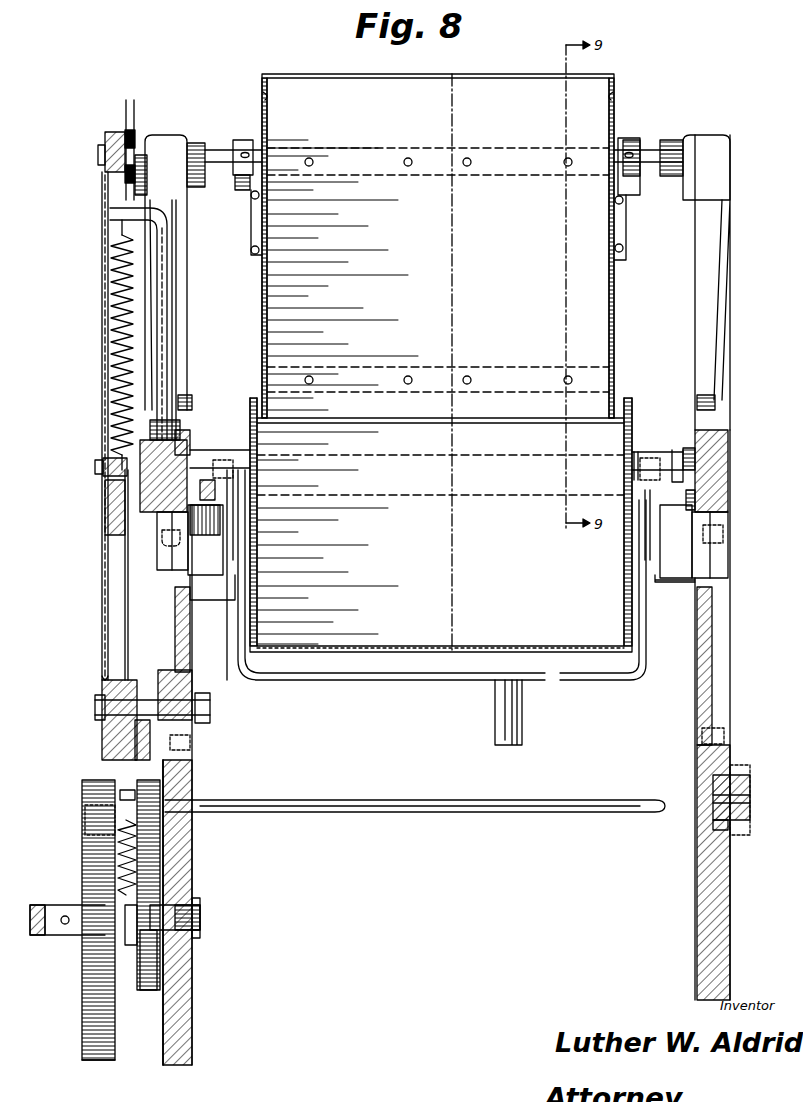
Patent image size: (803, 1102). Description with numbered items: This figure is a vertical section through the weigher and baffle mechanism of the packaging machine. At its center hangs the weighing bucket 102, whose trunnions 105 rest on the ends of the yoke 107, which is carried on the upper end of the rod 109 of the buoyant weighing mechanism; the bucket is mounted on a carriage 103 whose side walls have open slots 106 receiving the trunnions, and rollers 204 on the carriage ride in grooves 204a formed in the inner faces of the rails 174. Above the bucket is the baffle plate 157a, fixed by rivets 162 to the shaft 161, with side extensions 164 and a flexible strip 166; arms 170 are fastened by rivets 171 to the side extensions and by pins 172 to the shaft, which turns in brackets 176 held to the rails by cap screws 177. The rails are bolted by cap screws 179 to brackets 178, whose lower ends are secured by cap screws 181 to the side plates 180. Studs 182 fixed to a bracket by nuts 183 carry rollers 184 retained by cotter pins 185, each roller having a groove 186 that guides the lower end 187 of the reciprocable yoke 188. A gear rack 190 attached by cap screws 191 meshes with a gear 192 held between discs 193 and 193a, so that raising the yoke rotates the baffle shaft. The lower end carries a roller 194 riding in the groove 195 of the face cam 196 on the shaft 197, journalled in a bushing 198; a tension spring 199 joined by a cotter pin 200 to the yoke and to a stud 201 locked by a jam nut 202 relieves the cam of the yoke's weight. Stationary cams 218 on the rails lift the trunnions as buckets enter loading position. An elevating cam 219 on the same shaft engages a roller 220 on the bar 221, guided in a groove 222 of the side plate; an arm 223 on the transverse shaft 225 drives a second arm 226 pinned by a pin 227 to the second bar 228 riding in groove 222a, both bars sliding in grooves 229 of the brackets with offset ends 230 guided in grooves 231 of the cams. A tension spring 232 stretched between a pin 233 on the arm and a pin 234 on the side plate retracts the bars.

The weighing bucket 102 is at (355, 648).
The carriage 103 is at (640, 452).
The trunnions 105 is at (205, 465).
The open slots 106 is at (676, 452).
The yoke 107 is at (305, 684).
The rod 109 is at (495, 712).
The baffle plate 157a is at (303, 80).
The shaft 161 is at (655, 145).
The rivets 162 is at (409, 158).
The side extensions 164 is at (262, 95).
The flexible strip 166 is at (402, 422).
The arms 170 is at (247, 228).
The rivets 171 is at (248, 200).
The pins 172 is at (245, 148).
The rails 174 is at (160, 545).
The brackets 176 is at (187, 362).
The cap screws 177 is at (192, 402).
The brackets 178 is at (195, 678).
The cap screws 179 is at (165, 548).
The side plates 180 is at (195, 1006).
The cap screws 181 is at (195, 745).
The studs 182 is at (210, 712).
The nuts 183 is at (205, 700).
The roller 184 is at (102, 690).
The cotter pin 185 is at (98, 722).
The groove 186 is at (105, 676).
The lower end 187 is at (133, 672).
The yoke 188 is at (102, 324).
The gear rack 190 is at (125, 185).
The cap screws 191 is at (152, 118).
The gears 192 is at (128, 118).
The disc 193 is at (138, 125).
The disc 193a is at (115, 130).
The roller 194 is at (85, 825).
The groove 195 is at (82, 1020).
The baffle-operating face cam 196 is at (98, 1062).
The shaft 197 is at (200, 918).
The bushing 198 is at (200, 940).
The tension spring 199 is at (115, 386).
The cotter pin 200 is at (103, 468).
The stud 201 is at (176, 324).
The jam nut 202 is at (180, 428).
The rollers 204 is at (165, 480).
The grooves 204a is at (700, 490).
The stationary cams 218 is at (245, 528).
The elevating cam 219 is at (148, 990).
The roller 220 is at (150, 850).
The vertically movable bar 221 is at (208, 585).
The groove 222 is at (198, 856).
The groove 222a is at (728, 828).
The arm 223 is at (148, 770).
The shaft 225 is at (363, 795).
The arm 226 is at (745, 765).
The pin 227 is at (750, 797).
The second vertically movable bar 228 is at (677, 585).
The grooves 229 is at (180, 642).
The offset ends 230 is at (228, 555).
The grooves 231 is at (225, 462).
The tension spring 232 is at (118, 855).
The pin 233 is at (120, 796).
The pin 234 is at (130, 945).